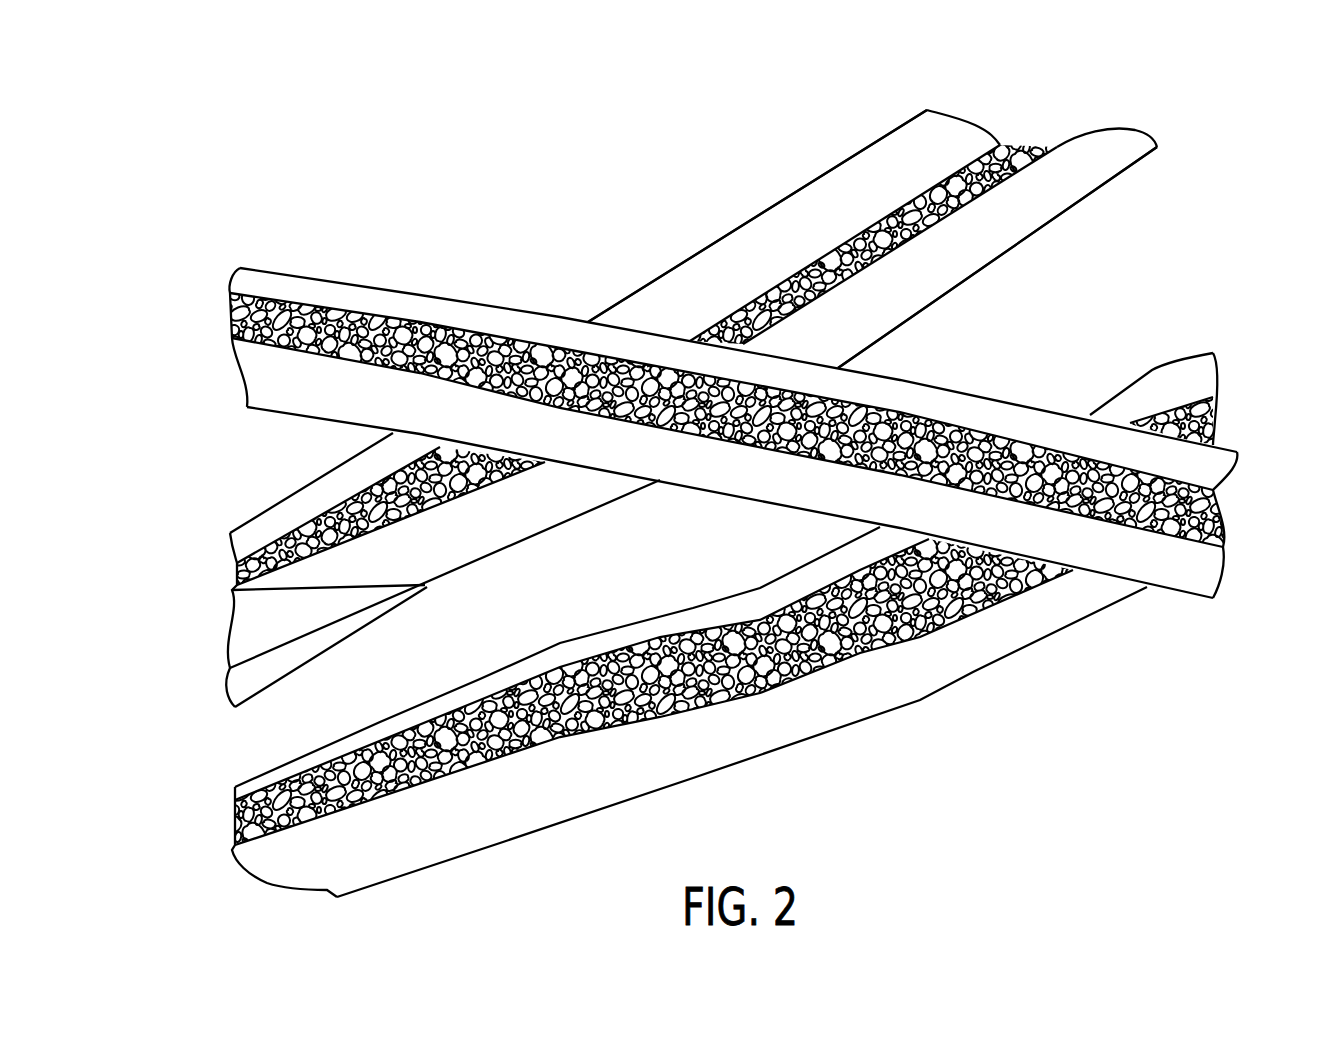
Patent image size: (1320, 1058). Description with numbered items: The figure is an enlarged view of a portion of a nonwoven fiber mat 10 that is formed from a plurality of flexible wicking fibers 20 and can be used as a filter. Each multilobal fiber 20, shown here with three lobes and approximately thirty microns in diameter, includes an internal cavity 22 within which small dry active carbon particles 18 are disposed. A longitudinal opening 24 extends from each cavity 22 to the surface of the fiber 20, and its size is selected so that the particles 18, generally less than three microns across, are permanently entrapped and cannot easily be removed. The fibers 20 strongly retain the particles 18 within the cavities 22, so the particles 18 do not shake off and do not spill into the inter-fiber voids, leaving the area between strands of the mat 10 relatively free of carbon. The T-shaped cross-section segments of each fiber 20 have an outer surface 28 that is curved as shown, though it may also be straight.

The fiber mat 10 is at (1152, 320).
The active carbon particles 18 is at (960, 185).
The flexible fibers 20 is at (1032, 200).
The internal cavity 22 is at (240, 295).
The longitudinal opening 24 is at (945, 489).
The outer surface 28 is at (485, 317).